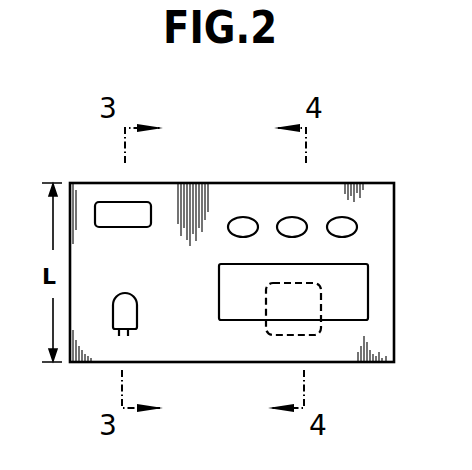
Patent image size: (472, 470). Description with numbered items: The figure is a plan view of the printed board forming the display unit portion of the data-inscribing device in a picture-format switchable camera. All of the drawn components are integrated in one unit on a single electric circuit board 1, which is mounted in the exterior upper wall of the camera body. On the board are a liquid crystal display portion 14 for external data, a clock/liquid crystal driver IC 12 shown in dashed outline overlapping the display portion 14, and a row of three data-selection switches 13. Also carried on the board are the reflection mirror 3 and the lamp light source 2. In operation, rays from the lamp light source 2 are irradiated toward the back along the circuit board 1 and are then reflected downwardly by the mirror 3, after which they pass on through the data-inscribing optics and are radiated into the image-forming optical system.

The electric circuit board 1 is at (383, 200).
The lamp light source 2 is at (127, 298).
The reflection mirror 3 is at (132, 212).
The clock/liquid crystal driver IC 12 is at (276, 328).
The data-selection switches 13 is at (342, 223).
The liquid crystal display portion for external data 14 is at (355, 296).